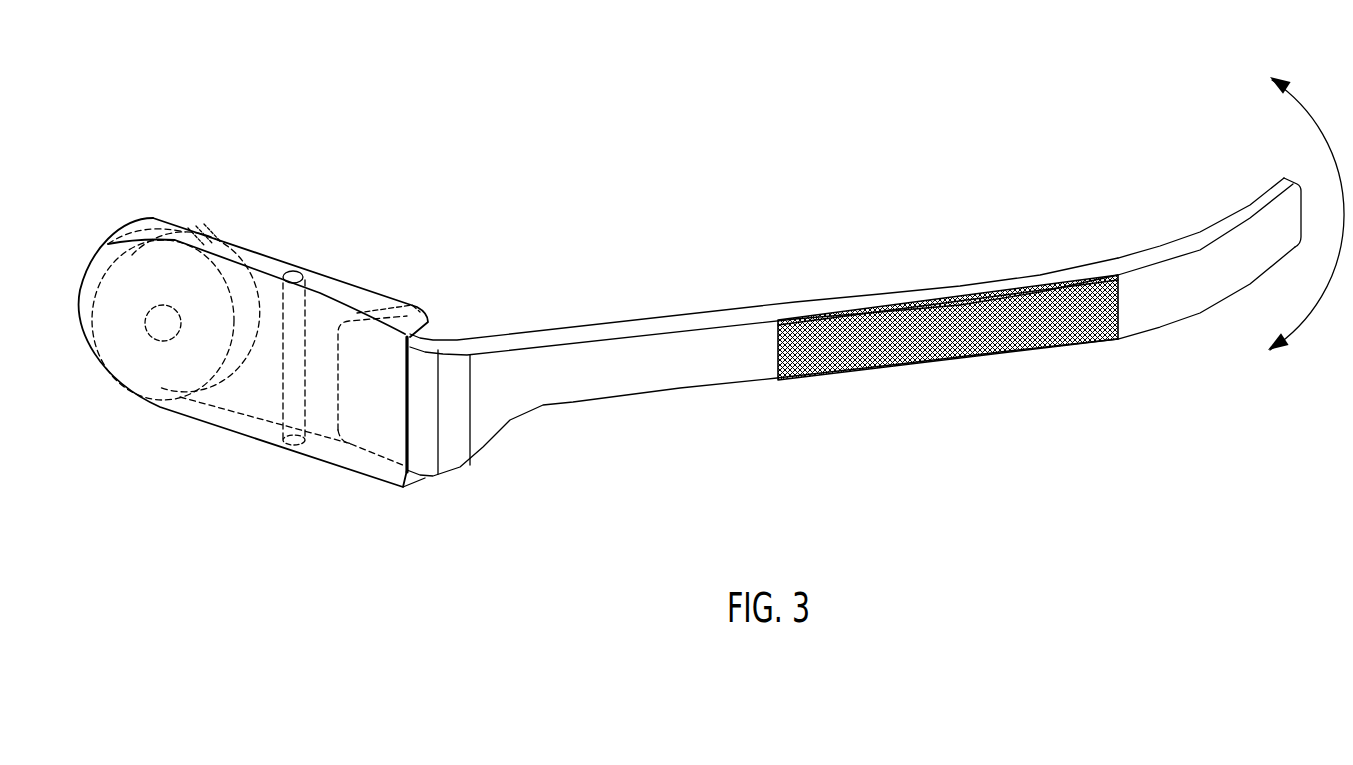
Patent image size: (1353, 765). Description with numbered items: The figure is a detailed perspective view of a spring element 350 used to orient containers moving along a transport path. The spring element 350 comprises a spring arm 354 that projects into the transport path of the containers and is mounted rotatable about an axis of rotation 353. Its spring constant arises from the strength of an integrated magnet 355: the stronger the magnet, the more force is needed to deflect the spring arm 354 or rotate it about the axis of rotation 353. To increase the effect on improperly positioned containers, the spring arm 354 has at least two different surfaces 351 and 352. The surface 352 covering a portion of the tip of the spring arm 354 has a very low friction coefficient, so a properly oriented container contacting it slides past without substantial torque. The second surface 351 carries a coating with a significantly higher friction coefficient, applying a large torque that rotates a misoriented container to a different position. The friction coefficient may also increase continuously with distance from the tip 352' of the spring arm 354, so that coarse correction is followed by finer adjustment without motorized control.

The spring element 350 is at (599, 258).
The second surface 351 is at (943, 354).
The surface covering a portion of the tip 352 is at (1231, 221).
The tip of spring arm 352' is at (1274, 181).
The axis of rotation 353 is at (292, 271).
The spring arm 354 is at (642, 382).
The integrated magnet 355 is at (200, 293).